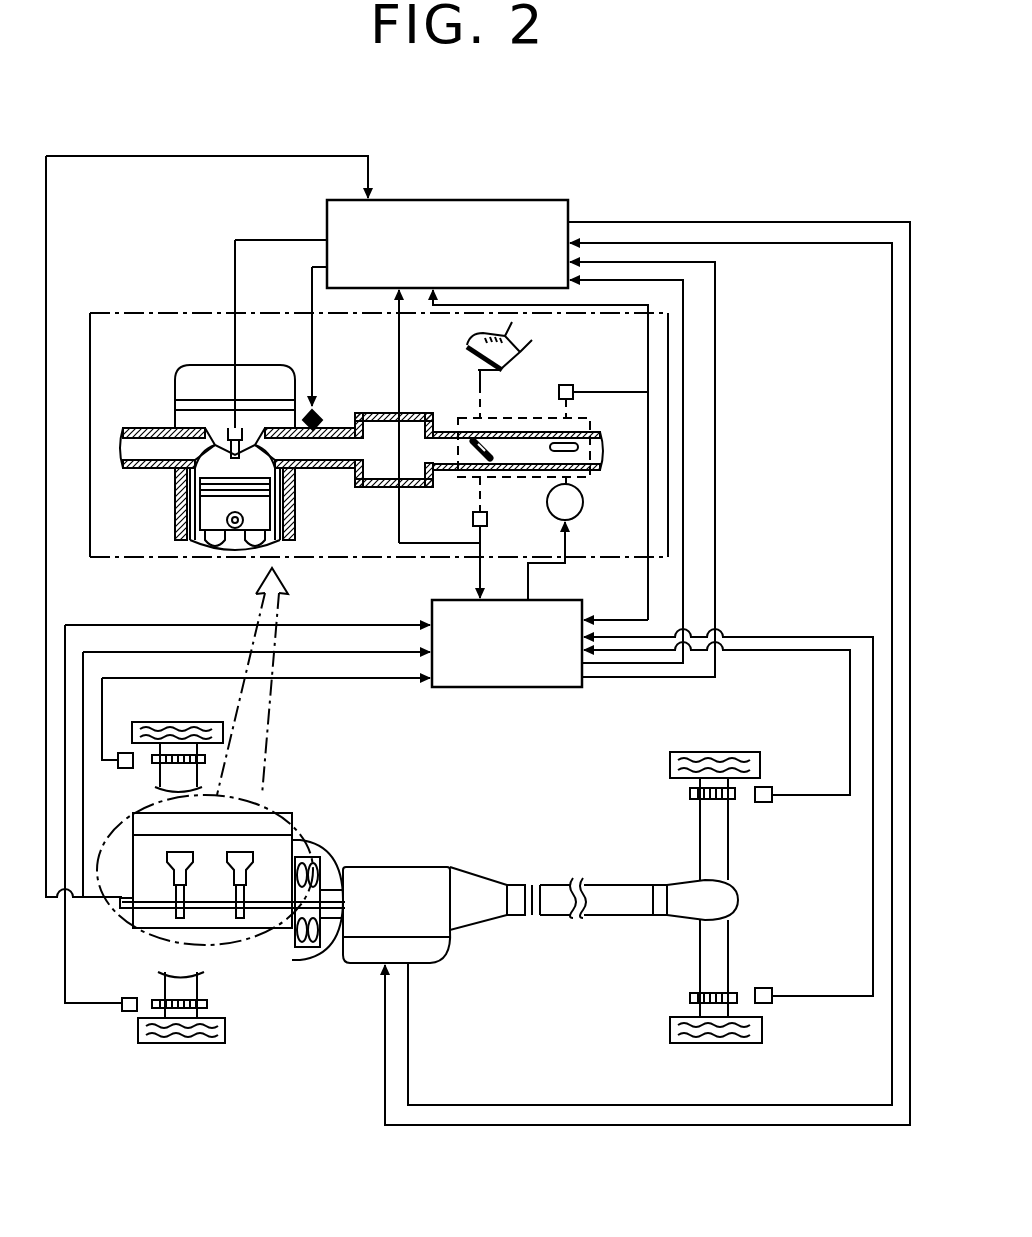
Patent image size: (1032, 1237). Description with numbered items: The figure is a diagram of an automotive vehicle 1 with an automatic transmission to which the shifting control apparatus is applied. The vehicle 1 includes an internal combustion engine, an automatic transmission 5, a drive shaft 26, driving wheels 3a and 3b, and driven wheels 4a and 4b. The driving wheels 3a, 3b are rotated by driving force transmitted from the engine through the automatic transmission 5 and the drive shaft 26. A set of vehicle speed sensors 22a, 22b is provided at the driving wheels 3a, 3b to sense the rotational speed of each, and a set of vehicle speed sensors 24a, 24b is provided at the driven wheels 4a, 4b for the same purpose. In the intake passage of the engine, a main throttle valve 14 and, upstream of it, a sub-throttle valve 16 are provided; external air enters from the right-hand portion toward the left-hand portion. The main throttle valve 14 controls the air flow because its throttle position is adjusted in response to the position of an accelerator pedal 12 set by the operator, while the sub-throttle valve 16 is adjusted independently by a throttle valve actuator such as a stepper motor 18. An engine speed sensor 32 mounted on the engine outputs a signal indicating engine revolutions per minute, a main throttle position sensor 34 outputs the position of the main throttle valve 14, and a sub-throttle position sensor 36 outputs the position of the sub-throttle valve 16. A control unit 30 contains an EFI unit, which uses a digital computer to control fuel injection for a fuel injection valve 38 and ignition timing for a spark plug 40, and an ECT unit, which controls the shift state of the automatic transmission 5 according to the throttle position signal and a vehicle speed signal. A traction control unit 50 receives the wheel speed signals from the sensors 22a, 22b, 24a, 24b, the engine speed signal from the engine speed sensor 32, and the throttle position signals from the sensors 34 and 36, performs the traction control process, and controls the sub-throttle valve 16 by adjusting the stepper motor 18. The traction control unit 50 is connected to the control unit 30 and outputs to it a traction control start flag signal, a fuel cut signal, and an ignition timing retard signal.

The automotive vehicle 1 is at (333, 978).
The driving wheel 3a is at (757, 752).
The driving wheel 3b is at (758, 1043).
The driven wheel 4a is at (172, 722).
The driven wheel 4b is at (195, 1043).
The automatic transmission 5 is at (385, 867).
The accelerator pedal 12 is at (466, 348).
The main throttle valve 14 is at (496, 432).
The sub-throttle valve 16 is at (583, 440).
The stepper motor 18 is at (583, 504).
The vehicle speed sensor 22a is at (763, 803).
The vehicle speed sensor 22b is at (763, 988).
The vehicle speed sensor 24a is at (124, 753).
The vehicle speed sensor 24b is at (122, 1008).
The drive shaft 26 is at (612, 908).
The control unit 30 is at (413, 200).
The engine speed sensor 32 is at (120, 906).
The main throttle position sensor 34 is at (487, 520).
The sub-throttle position sensor 36 is at (570, 385).
The fuel injection valve 38 is at (320, 412).
The spark plug 40 is at (236, 440).
The traction control unit 50 is at (578, 600).